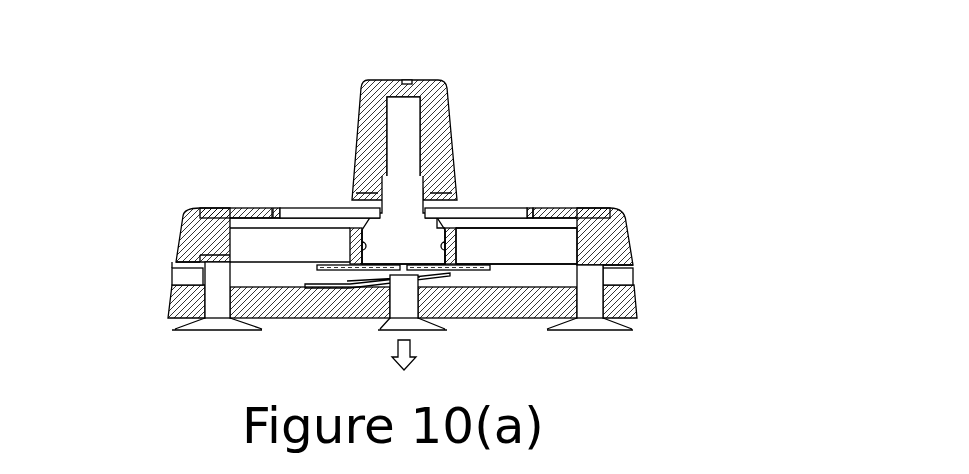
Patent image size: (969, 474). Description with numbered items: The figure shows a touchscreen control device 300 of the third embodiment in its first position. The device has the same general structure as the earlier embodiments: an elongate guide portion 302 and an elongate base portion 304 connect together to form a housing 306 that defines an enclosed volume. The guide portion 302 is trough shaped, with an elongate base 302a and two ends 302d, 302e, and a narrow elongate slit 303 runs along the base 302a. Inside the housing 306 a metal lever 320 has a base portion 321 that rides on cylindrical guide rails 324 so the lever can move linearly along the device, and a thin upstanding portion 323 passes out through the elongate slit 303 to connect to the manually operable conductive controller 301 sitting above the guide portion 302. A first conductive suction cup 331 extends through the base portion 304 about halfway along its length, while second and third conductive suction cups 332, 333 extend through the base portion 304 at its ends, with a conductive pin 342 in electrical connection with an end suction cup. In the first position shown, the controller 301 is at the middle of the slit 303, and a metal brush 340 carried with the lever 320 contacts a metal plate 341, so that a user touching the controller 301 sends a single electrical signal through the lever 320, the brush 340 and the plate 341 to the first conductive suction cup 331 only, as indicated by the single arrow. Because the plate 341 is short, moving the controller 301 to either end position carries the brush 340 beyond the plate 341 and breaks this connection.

The touchscreen control device 300 is at (726, 43).
The manually operable conductive controller 301 is at (430, 92).
The guide portion 302 is at (629, 213).
The base of the guide portion 302a is at (250, 210).
The end of the guide portion 302d is at (193, 234).
The end of the guide portion 302e is at (622, 236).
The elongate slit 303 is at (333, 210).
The base portion 304 is at (640, 315).
The housing 306 is at (625, 171).
The metal lever 320 is at (400, 197).
The base portion of the metal lever 321 is at (417, 243).
The upstanding portion of the metal lever 323 is at (418, 143).
The guide rails 324 is at (543, 243).
The first conductive suction cup 331 is at (410, 322).
The second conductive suction cup 332 is at (215, 322).
The third conductive suction cup 333 is at (583, 318).
The metal brush 340 is at (338, 272).
The metal plate 341 is at (175, 275).
The conductive pin 342 is at (630, 278).